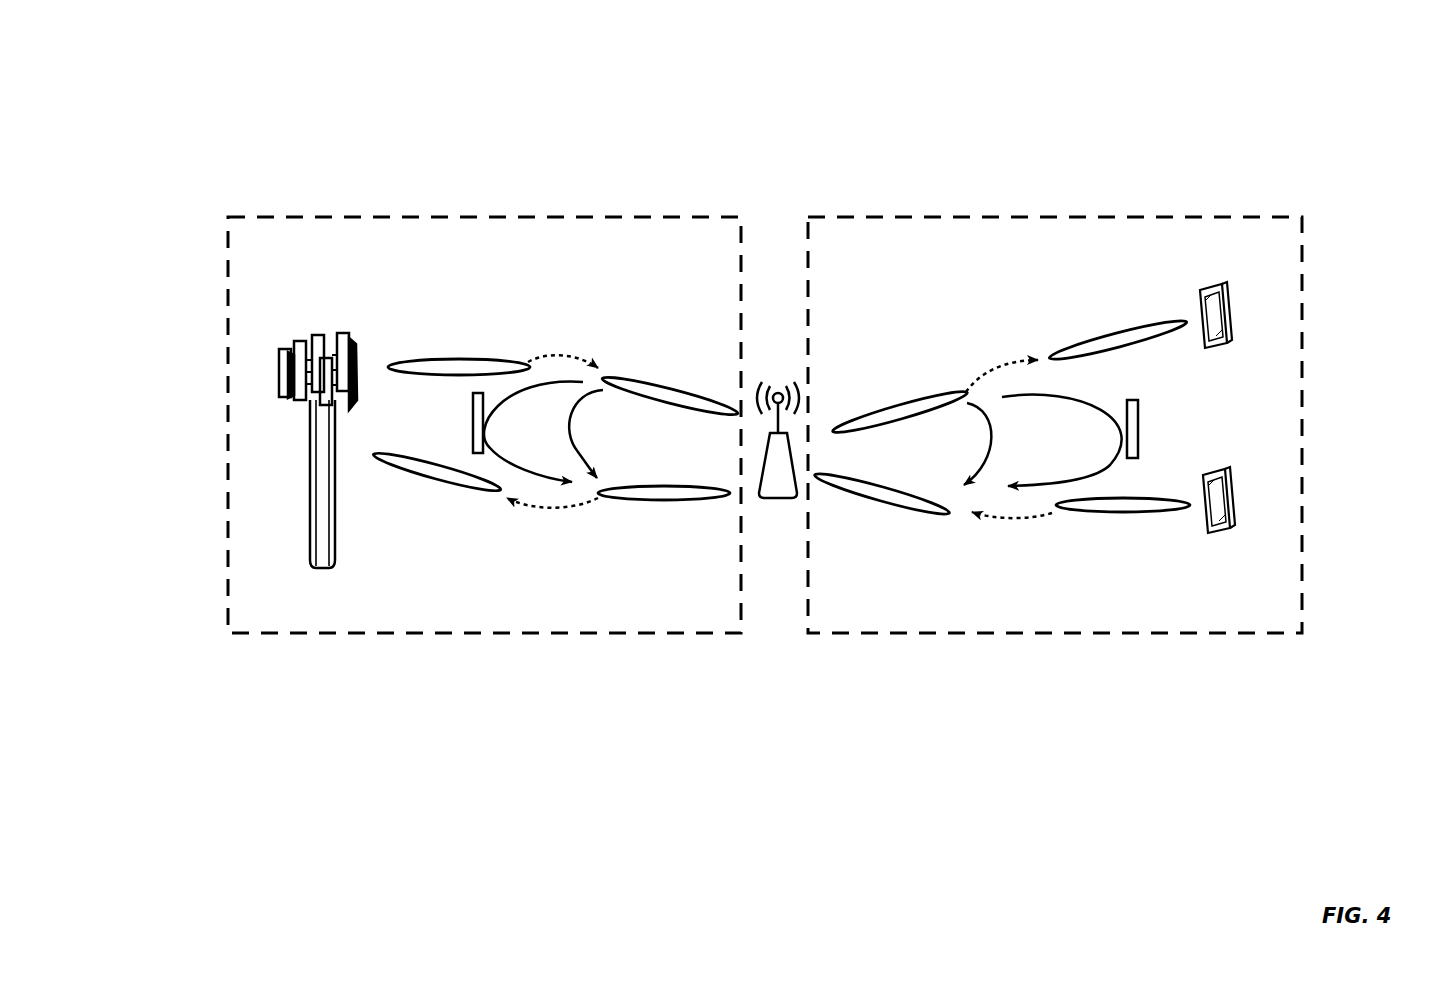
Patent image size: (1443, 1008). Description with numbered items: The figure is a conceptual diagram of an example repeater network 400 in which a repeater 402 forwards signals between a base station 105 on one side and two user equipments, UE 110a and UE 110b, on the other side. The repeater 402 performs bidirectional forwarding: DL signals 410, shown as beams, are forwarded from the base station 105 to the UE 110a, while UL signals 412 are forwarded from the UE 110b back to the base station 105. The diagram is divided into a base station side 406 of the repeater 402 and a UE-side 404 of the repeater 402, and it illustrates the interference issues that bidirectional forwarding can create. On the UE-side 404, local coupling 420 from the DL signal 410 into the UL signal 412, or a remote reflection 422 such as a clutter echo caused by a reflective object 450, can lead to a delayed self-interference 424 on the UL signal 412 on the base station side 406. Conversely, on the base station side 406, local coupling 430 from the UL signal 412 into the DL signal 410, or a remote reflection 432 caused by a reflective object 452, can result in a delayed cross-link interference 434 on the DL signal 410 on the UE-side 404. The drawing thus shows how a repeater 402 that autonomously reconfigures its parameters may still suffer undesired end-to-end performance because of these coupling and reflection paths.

The repeater network 400 is at (132, 48).
The base station side 406 is at (686, 215).
The UE-side 404 is at (915, 215).
The base station 105 is at (288, 344).
The DL signals 410 is at (452, 358).
The UL signals 412 is at (430, 488).
The reflective object 452 is at (478, 454).
The remote reflection 432 is at (508, 397).
The local coupling 430 is at (587, 405).
The delayed self-interference 424 is at (565, 502).
The repeater 402 is at (776, 500).
The delayed cross-link interference 434 is at (993, 366).
The local coupling 420 is at (983, 430).
The remote reflection 422 is at (1100, 416).
The reflective object 450 is at (1138, 432).
The UE 110a is at (1228, 300).
The UE 110b is at (1231, 485).